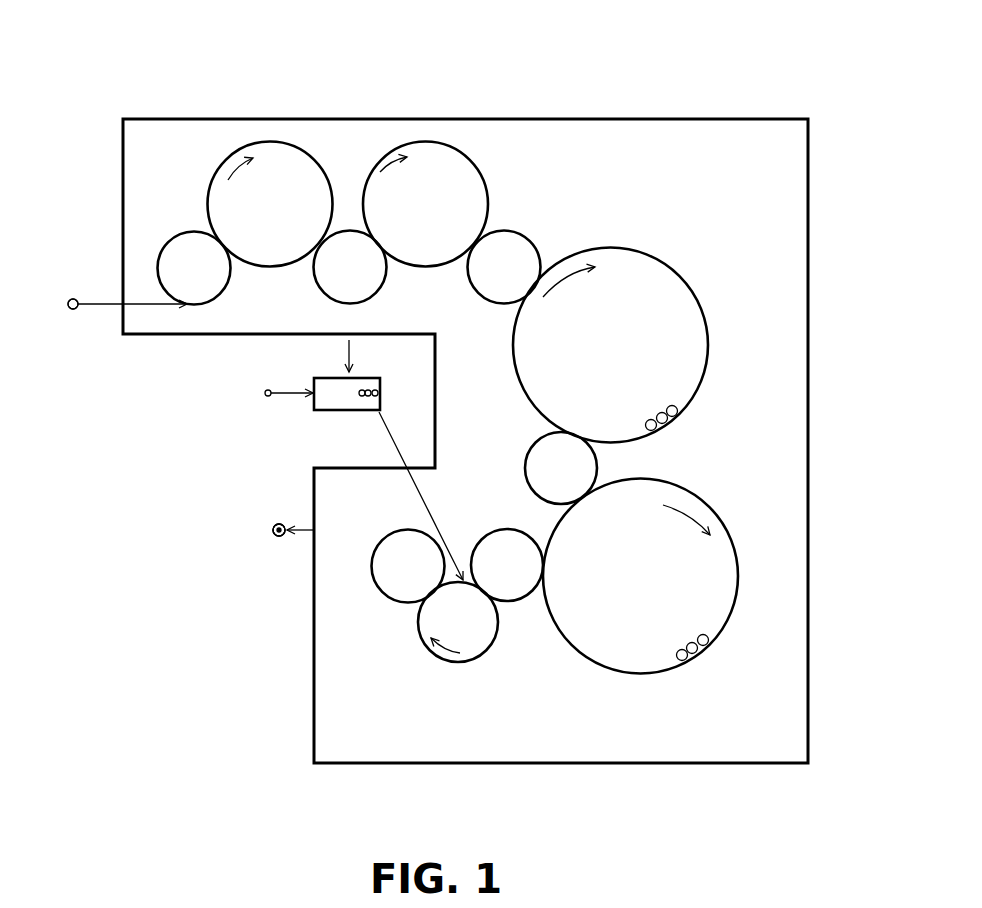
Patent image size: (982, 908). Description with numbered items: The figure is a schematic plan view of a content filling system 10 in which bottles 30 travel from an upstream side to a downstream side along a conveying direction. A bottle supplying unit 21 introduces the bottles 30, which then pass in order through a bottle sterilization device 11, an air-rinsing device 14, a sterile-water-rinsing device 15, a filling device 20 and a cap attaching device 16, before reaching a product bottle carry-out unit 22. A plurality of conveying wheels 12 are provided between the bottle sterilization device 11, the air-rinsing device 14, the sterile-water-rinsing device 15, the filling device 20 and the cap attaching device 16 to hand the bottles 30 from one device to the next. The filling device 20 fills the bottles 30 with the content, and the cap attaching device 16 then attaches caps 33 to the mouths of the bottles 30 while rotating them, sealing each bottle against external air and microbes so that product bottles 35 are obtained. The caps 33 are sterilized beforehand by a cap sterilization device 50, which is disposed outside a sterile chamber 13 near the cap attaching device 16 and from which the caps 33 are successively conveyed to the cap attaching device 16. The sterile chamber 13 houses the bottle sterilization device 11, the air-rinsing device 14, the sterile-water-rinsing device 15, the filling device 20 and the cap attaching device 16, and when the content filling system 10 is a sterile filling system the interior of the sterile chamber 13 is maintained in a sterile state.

The content filling system 10 is at (620, 88).
The bottle sterilization device 11 is at (295, 155).
The conveying wheels 12 is at (172, 257).
The sterile chamber 13 is at (521, 118).
The air-rinsing device 14 is at (425, 150).
The sterile-water-rinsing device 15 is at (657, 262).
The cap attaching device 16 is at (420, 625).
The filling device 20 is at (725, 572).
The bottle supplying unit 21 is at (122, 310).
The product bottle carry-out unit 22 is at (313, 527).
The bottles 30 is at (73, 298).
The caps 33 is at (268, 400).
The product bottles 35 is at (232, 612).
The cap sterilization device 50 is at (333, 410).